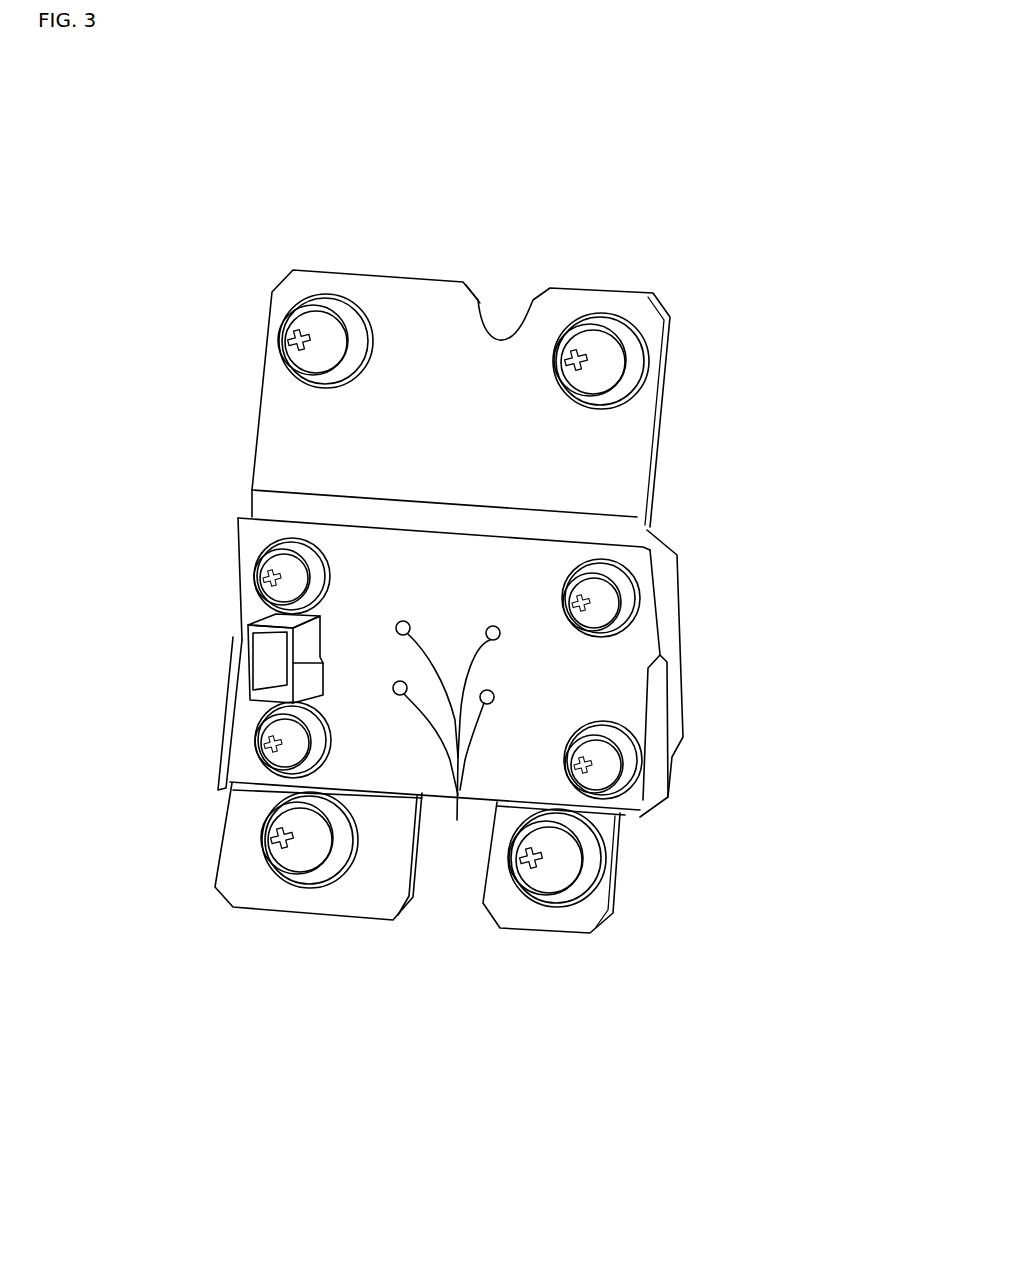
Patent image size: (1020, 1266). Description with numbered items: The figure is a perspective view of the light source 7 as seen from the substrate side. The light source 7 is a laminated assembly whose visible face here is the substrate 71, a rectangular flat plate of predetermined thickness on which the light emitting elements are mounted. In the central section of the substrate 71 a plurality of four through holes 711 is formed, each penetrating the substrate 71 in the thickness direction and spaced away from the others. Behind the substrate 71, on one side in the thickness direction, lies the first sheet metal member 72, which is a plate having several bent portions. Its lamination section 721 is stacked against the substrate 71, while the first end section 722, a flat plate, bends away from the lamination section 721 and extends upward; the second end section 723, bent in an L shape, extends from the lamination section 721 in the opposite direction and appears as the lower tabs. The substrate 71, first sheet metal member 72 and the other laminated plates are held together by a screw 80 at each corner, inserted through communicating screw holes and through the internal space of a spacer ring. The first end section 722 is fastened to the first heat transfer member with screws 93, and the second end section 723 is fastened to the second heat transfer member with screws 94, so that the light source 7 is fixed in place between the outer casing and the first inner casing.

The light source 7 is at (715, 278).
The first sheet metal member 72 is at (658, 433).
The first end section 722 is at (330, 427).
The lamination section 721 is at (617, 528).
The substrate 71 is at (565, 667).
The through holes 711 is at (457, 820).
The second end section 723 is at (590, 914).
The screws 93 is at (313, 322).
The screw 80 is at (277, 565).
The screws 94 is at (300, 858).